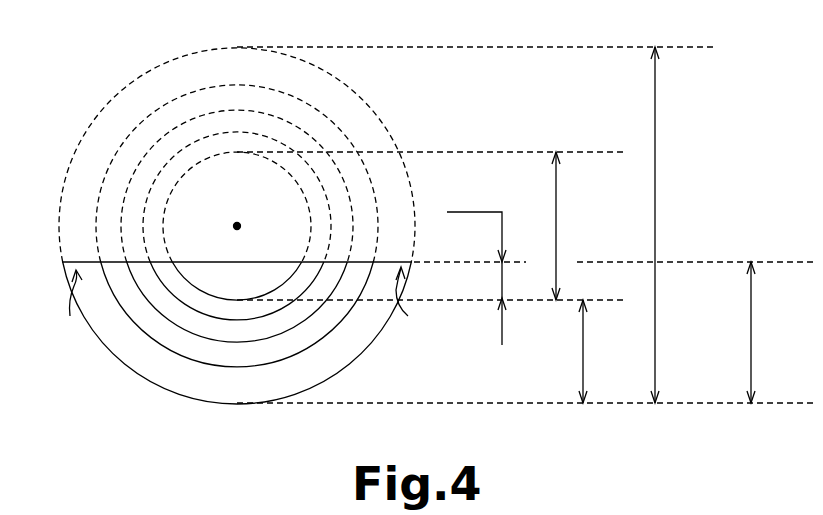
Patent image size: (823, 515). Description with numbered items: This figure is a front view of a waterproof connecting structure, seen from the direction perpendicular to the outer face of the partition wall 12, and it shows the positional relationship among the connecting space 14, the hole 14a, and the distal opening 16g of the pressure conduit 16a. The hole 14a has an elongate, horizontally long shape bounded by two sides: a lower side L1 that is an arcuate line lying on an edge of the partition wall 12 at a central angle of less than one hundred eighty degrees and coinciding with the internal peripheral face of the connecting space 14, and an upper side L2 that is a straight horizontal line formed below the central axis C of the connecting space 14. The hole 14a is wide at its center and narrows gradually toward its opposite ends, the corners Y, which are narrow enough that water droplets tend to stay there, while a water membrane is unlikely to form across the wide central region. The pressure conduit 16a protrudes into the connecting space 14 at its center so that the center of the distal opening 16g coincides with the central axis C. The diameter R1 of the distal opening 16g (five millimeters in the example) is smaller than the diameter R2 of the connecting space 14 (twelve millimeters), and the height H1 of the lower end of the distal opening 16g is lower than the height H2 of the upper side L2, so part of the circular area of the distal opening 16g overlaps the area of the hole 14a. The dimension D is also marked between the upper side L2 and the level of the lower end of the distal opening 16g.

The partition wall 12 is at (178, 74).
The connecting space 14 is at (340, 86).
The hole 14a is at (160, 386).
The pressure conduit 16a is at (178, 287).
The distal opening 16g is at (205, 287).
The central axis C is at (240, 224).
The lower side L1 is at (356, 360).
The upper side L2 is at (64, 262).
The corners Y is at (237, 303).
The distance D is at (470, 263).
The diameter of the distal opening R1 is at (430, 226).
The diameter of the connecting space R2 is at (525, 225).
The height of the lower end of the distal opening H1 is at (601, 351).
The height of the upper side H2 is at (695, 332).